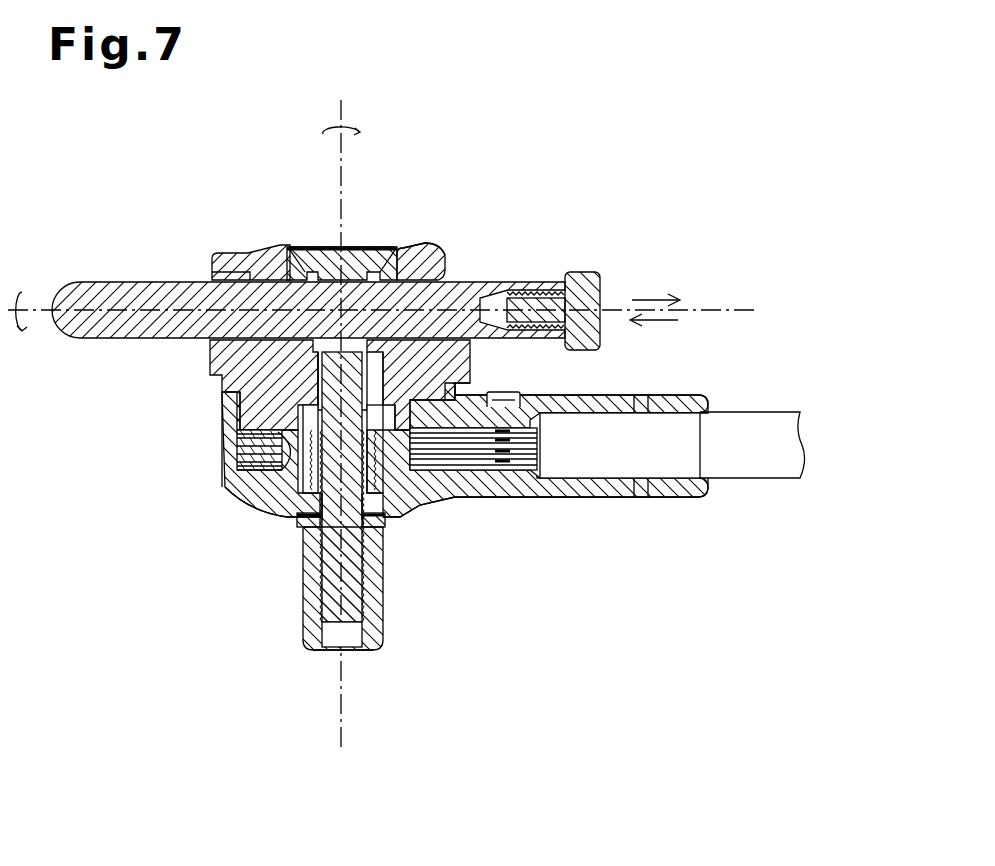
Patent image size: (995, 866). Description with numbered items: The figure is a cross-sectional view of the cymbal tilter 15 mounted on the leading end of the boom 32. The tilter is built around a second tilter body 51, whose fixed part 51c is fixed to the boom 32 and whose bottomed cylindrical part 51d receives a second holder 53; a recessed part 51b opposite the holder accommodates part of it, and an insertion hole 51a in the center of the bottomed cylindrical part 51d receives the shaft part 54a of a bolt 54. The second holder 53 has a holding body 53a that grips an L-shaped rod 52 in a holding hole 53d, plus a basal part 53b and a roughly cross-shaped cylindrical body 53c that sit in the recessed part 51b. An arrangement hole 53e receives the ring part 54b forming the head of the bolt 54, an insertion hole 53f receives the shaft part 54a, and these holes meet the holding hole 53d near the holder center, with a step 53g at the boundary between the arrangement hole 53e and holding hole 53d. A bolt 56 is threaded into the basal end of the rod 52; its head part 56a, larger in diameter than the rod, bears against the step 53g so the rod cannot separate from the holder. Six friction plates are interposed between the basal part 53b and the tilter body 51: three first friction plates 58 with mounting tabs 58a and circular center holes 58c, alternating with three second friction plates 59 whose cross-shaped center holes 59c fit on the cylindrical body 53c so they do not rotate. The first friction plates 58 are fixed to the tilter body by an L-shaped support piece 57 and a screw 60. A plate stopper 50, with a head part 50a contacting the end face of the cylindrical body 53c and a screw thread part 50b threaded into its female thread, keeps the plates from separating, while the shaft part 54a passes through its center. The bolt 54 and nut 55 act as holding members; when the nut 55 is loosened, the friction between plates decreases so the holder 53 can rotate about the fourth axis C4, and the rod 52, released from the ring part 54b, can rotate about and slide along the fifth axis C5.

The cymbal tilter 15 is at (608, 188).
The boom 32 is at (740, 478).
The plate stopper 50 is at (385, 520).
The head part 50a is at (400, 498).
The screw thread part 50b is at (318, 395).
The second tilter body 51 is at (225, 503).
The insertion hole 51a is at (265, 515).
The recessed part 51b is at (228, 407).
The fixed part 51c is at (598, 498).
The bottomed cylindrical part 51d is at (400, 522).
The L-shaped rod 52 is at (82, 340).
The second holder 53 is at (237, 251).
The holding body 53a is at (446, 263).
The basal part 53b is at (460, 400).
The cylindrical body 53c is at (415, 440).
The holding hole 53d is at (212, 270).
The arrangement hole 53e is at (396, 250).
The insertion hole 53f is at (318, 368).
The step 53g is at (412, 258).
The bolt 54 is at (357, 250).
The shaft part 54a is at (320, 585).
The ring part 54b is at (300, 246).
The nut 55 is at (383, 630).
The bolt 56 is at (575, 272).
The head part 56a is at (600, 272).
The L-shaped support piece 57 is at (640, 405).
The first friction plate 58 is at (245, 437).
The mounting tab 58a is at (538, 432).
The center hole 58c is at (228, 477).
The second friction plate 59 is at (250, 450).
The center hole 59c is at (268, 462).
The screw 60 is at (520, 396).
The fourth axis C4 is at (344, 152).
The fifth axis C5 is at (735, 310).